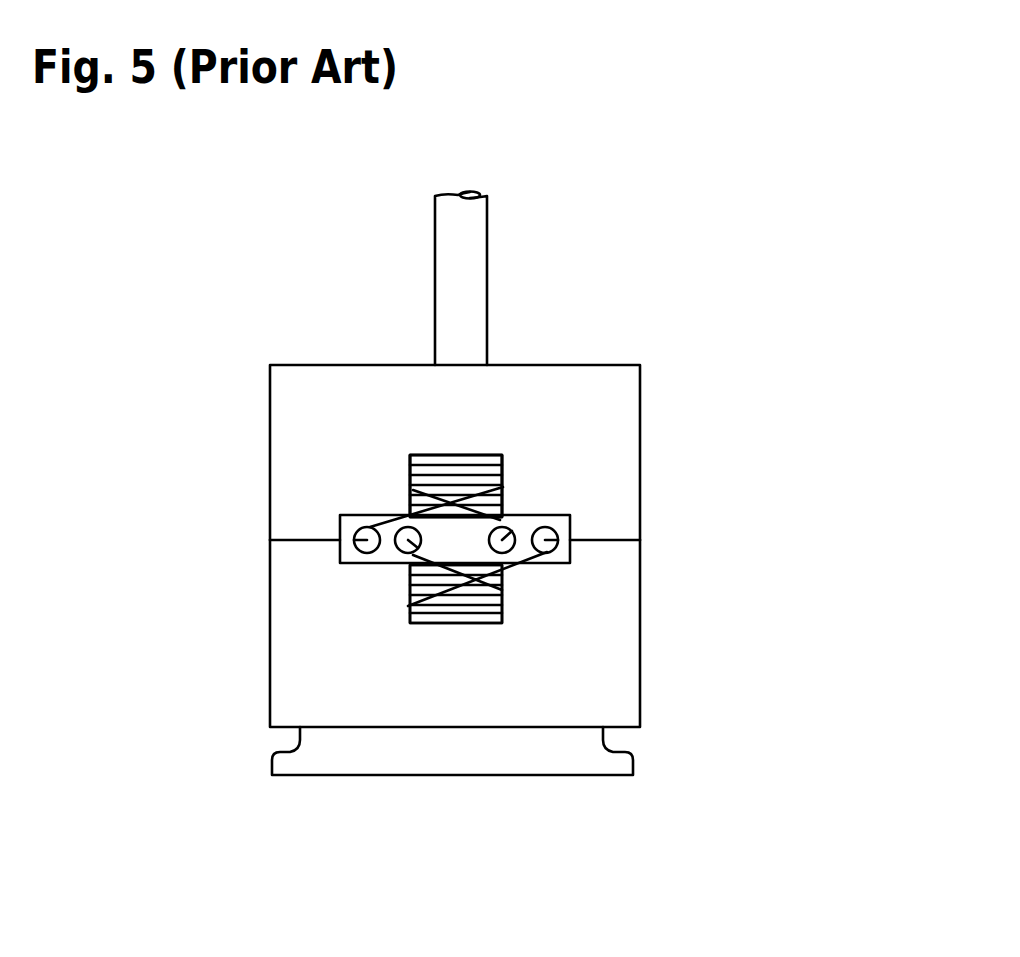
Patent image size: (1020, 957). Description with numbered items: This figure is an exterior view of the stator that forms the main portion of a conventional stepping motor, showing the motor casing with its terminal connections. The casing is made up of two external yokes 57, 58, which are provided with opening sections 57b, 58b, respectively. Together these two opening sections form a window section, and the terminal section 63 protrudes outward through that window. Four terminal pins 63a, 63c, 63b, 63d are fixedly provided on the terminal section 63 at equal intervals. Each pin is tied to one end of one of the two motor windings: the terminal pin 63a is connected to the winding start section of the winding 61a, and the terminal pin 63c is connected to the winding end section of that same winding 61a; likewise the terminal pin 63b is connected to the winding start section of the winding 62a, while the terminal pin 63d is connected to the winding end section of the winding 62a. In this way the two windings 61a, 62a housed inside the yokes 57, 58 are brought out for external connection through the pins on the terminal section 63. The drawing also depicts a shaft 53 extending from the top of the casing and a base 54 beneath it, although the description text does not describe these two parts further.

The rotary shaft 53 is at (473, 280).
The base plate 54 is at (452, 758).
The external yoke 57 is at (613, 430).
The opening section 57b is at (418, 490).
The external yoke 58 is at (623, 667).
The opening section 58b is at (418, 600).
The winding 61a is at (490, 467).
The winding 62a is at (458, 607).
The terminal section 63 is at (570, 535).
The terminal pin 63a is at (353, 541).
The terminal pin 63b is at (396, 522).
The terminal pin 63c is at (514, 530).
The terminal pin 63d is at (551, 556).